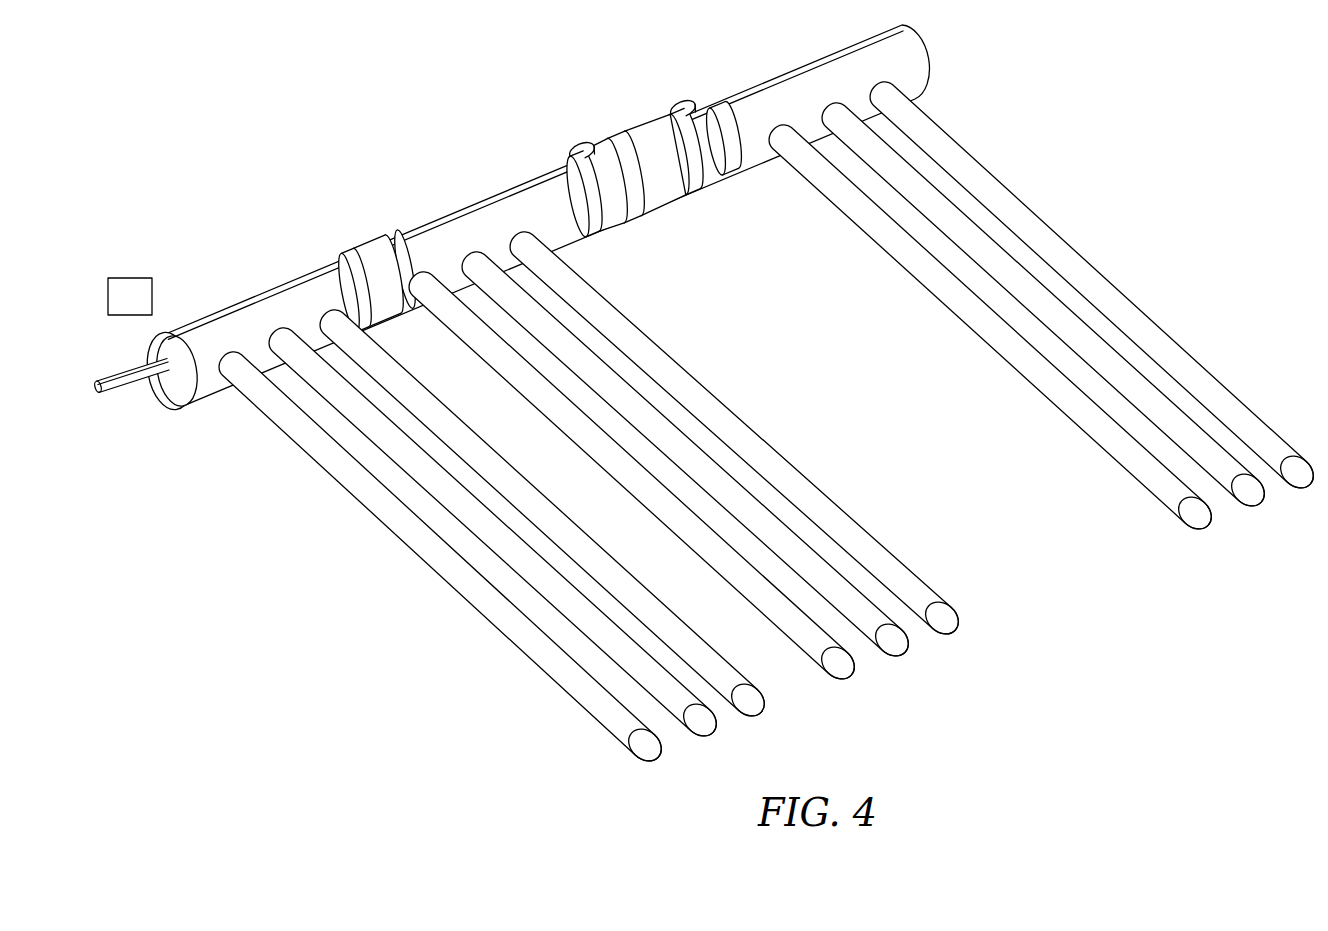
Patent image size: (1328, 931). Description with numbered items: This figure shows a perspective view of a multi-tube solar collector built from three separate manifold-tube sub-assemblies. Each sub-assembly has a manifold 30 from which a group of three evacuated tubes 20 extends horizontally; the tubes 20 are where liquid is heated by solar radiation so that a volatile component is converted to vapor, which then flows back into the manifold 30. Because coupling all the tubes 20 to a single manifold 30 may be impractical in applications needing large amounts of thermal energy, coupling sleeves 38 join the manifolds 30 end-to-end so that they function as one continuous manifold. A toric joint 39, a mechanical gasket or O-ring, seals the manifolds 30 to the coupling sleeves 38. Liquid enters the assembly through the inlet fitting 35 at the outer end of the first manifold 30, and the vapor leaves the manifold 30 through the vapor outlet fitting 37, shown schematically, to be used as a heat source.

The tubes 20 is at (582, 695).
The manifold 30 is at (463, 235).
The inlet fitting 35 is at (113, 400).
The vapor outlet fitting 37 is at (123, 384).
The coupling sleeves 38 is at (662, 190).
The toric joint 39 is at (565, 155).